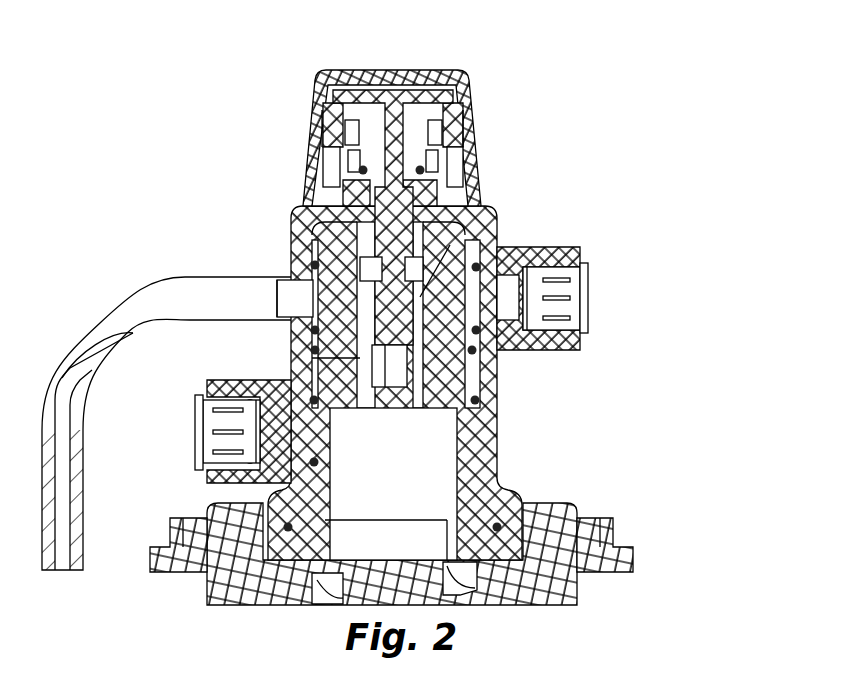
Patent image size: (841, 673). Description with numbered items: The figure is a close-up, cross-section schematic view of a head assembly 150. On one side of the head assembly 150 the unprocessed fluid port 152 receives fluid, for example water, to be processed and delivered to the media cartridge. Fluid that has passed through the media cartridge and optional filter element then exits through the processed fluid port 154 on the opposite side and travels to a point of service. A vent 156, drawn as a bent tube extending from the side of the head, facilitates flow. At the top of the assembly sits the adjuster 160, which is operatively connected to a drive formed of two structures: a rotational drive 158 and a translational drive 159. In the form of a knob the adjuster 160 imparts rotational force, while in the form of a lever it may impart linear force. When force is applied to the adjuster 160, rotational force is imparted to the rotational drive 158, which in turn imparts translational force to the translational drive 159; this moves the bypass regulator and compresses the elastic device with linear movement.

The head assembly 150 is at (598, 119).
The unprocessed fluid port 152 is at (205, 443).
The processed fluid port 154 is at (580, 308).
The vent 156 is at (62, 563).
The rotational drive 158 is at (405, 135).
The translational drive 159 is at (396, 377).
The adjuster 160 is at (470, 83).